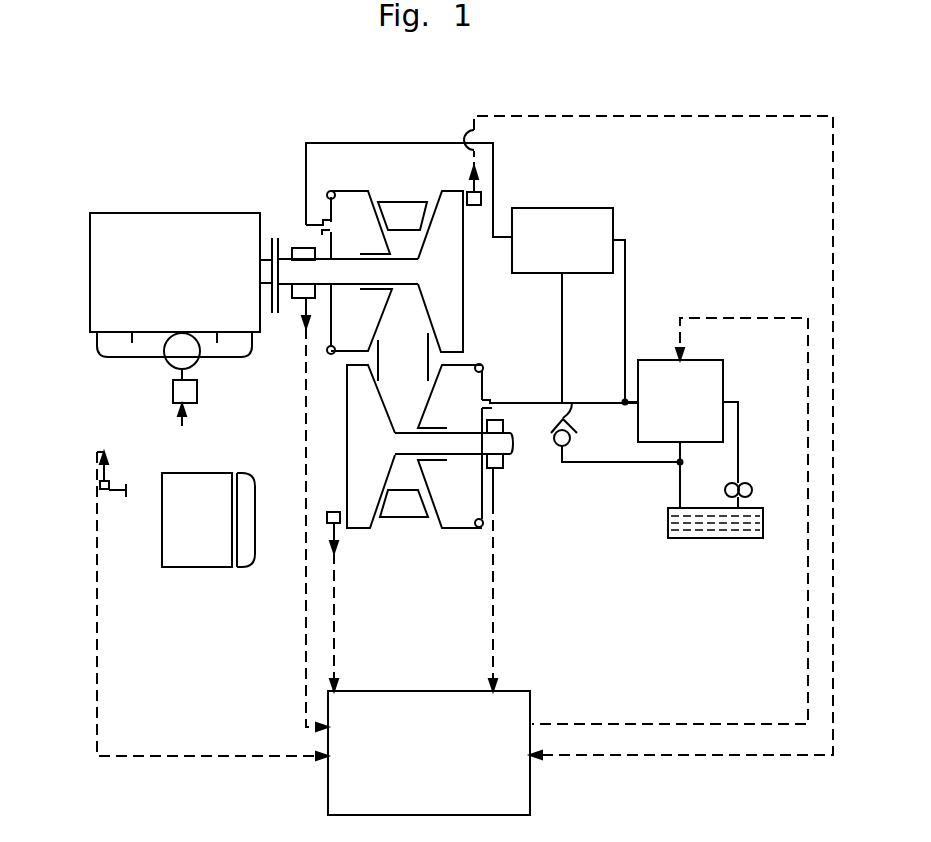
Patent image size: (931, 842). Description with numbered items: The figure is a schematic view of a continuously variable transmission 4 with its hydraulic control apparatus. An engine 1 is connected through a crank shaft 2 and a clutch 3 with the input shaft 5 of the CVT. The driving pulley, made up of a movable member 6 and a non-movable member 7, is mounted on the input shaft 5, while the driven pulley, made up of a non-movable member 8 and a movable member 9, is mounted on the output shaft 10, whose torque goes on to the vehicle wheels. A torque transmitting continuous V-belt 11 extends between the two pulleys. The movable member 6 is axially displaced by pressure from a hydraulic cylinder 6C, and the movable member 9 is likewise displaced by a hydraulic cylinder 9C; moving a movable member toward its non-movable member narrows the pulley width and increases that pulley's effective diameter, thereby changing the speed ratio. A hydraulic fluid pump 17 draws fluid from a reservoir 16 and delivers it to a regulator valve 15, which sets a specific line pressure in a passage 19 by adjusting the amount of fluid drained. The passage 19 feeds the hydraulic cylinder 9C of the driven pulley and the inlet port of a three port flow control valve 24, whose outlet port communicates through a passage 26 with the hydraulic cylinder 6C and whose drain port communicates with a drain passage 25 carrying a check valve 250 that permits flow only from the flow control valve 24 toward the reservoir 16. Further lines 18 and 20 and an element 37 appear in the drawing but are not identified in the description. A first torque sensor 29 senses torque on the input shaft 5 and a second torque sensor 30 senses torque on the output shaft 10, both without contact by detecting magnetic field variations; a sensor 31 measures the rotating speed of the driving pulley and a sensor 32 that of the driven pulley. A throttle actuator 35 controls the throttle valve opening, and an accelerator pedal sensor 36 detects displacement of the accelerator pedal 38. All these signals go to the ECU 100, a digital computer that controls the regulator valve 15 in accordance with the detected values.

The engine 1 is at (157, 226).
The crank shaft 2 is at (264, 258).
The clutch 3 is at (276, 312).
The continuously variable transmission 4 is at (409, 540).
The input shaft 5 is at (409, 255).
The movable member 6 is at (342, 348).
The hydraulic cylinder 6C is at (350, 201).
The non-movable member 7 is at (456, 282).
The non-movable member 8 is at (361, 522).
The movable member 9 is at (467, 533).
The hydraulic cylinder 9C is at (470, 390).
The output shaft 10 is at (452, 471).
The V-belt 11 is at (403, 212).
The regulator valve 15 is at (706, 360).
The reservoir 16 is at (692, 540).
The hydraulic fluid pump 17 is at (752, 488).
The oil supply line 18 is at (740, 444).
The passage 19 is at (629, 396).
The drain line 20 is at (682, 450).
The flow control valve 24 is at (600, 208).
The drain passage 25 is at (565, 323).
The passage 26 is at (495, 170).
The first torque sensor 29 is at (305, 249).
The second torque sensor 30 is at (502, 470).
The sensor 31 is at (465, 191).
The sensor 32 is at (325, 519).
The throttle actuator 35 is at (173, 392).
The accelerator pedal sensor 36 is at (100, 492).
The vehicle body 37 is at (200, 558).
The accelerator pedal 38 is at (128, 490).
The ECU 100 is at (530, 783).
The check valve 250 is at (548, 446).